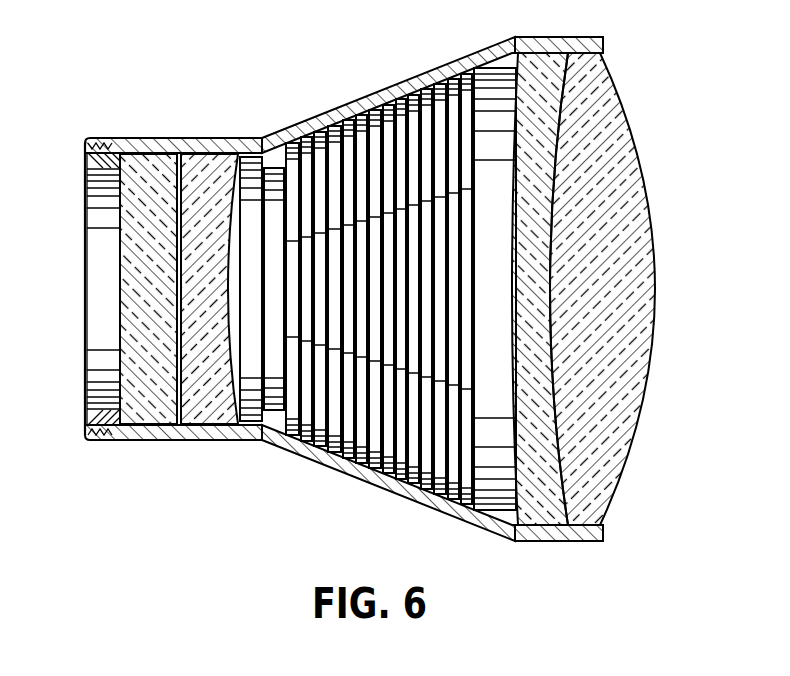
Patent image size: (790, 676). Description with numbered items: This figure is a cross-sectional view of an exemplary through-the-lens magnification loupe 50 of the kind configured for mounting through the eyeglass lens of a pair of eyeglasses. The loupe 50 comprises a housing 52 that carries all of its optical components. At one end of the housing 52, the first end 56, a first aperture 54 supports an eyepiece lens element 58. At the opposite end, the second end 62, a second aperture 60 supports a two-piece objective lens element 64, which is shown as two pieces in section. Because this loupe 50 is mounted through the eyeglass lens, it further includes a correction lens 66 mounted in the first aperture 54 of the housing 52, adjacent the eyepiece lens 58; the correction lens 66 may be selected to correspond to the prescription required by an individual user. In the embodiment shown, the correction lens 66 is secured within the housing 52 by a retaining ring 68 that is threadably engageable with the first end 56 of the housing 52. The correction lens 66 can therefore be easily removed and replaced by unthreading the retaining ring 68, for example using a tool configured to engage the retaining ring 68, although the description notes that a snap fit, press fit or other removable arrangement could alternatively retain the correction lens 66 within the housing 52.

The magnification loupe 50 is at (703, 72).
The housing 52 is at (349, 108).
The first aperture 54 is at (205, 418).
The first end 56 is at (87, 142).
The eyepiece lens element 58 is at (210, 158).
The second aperture 60 is at (598, 526).
The second end 62 is at (600, 44).
The two-piece objective lens element 64 is at (647, 203).
The correction lens 66 is at (120, 296).
The retaining ring 68 is at (88, 162).